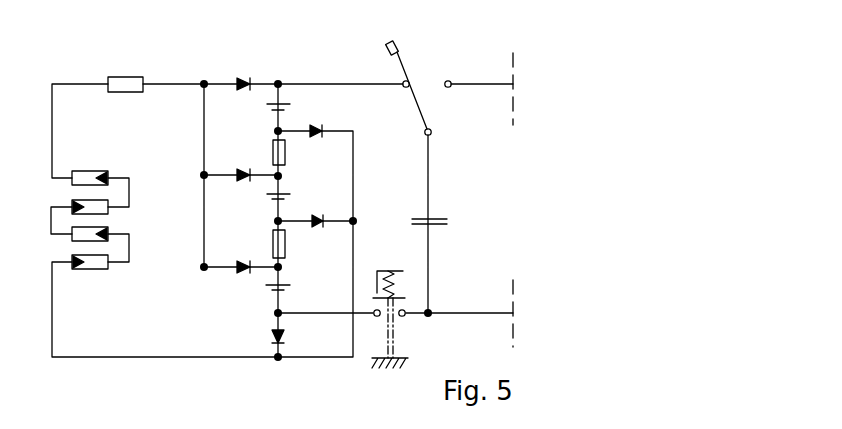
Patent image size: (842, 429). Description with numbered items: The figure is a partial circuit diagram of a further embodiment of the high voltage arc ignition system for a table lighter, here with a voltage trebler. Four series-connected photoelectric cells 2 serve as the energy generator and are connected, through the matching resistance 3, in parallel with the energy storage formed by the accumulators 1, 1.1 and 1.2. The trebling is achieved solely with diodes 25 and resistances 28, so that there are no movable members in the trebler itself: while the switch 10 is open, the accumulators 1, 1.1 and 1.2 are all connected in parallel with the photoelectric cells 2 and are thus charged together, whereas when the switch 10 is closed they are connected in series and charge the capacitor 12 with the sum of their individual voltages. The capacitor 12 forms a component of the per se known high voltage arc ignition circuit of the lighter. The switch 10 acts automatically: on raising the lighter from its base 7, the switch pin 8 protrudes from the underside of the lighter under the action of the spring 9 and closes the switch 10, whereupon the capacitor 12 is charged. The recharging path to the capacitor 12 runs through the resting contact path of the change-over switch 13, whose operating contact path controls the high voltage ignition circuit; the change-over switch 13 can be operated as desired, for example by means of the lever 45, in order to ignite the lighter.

The accumulator 1 is at (272, 106).
The accumulator 1.1 is at (288, 190).
The accumulator 1.2 is at (290, 285).
The photoelectric cells 2 is at (98, 263).
The matching resistance 3 is at (127, 77).
The base 7 is at (398, 370).
The switch pin 8 is at (393, 330).
The spring 9 is at (402, 285).
The switch 10 is at (380, 287).
The capacitor 12 is at (435, 218).
The change-over switch 13 is at (415, 113).
The diodes 25 is at (312, 338).
The resistances 28 is at (310, 248).
The lever 45 is at (398, 45).